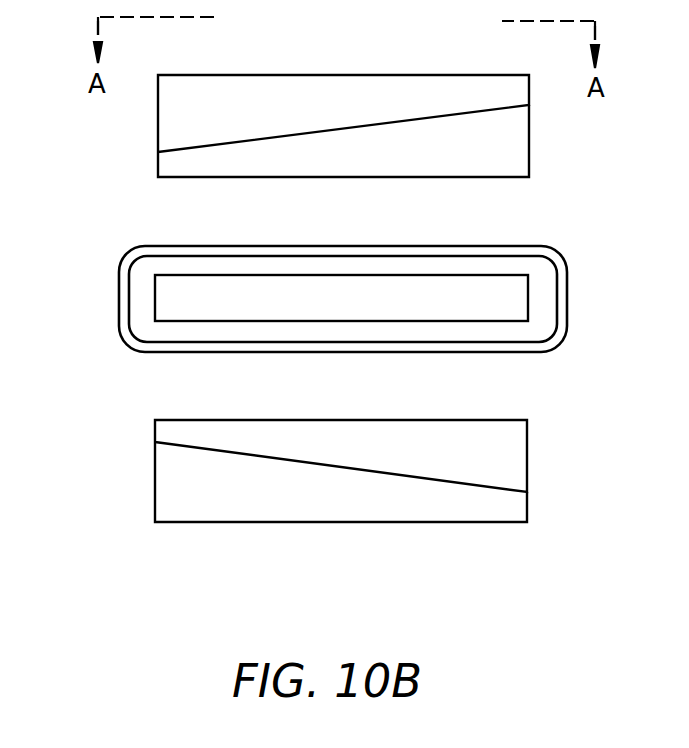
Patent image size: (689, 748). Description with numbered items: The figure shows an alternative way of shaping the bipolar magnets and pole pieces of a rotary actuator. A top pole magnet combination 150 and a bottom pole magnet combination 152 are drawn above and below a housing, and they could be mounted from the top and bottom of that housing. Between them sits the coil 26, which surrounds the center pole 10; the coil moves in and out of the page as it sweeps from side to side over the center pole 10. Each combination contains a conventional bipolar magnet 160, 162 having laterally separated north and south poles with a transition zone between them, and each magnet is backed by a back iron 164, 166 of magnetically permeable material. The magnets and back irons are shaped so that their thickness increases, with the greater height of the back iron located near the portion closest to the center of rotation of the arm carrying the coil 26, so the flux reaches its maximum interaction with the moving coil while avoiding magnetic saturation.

The center pole 10 is at (342, 310).
The coil 26 is at (118, 300).
The top pole magnet combination 150 is at (341, 101).
The bottom pole magnet combination 152 is at (340, 500).
The magnet 160 is at (530, 148).
The magnet 162 is at (529, 455).
The back iron 164 is at (295, 510).
The back iron 166 is at (347, 97).